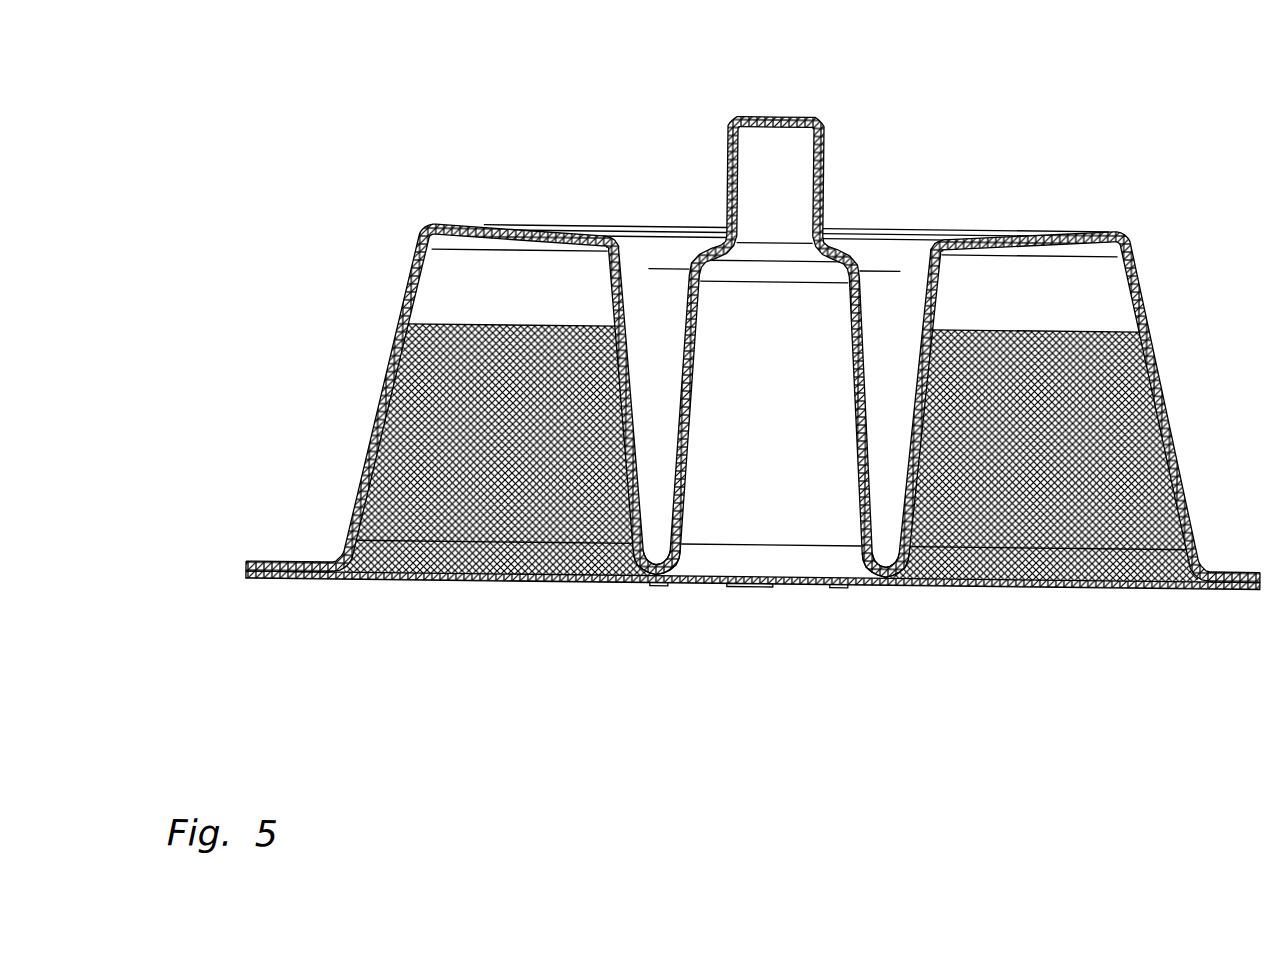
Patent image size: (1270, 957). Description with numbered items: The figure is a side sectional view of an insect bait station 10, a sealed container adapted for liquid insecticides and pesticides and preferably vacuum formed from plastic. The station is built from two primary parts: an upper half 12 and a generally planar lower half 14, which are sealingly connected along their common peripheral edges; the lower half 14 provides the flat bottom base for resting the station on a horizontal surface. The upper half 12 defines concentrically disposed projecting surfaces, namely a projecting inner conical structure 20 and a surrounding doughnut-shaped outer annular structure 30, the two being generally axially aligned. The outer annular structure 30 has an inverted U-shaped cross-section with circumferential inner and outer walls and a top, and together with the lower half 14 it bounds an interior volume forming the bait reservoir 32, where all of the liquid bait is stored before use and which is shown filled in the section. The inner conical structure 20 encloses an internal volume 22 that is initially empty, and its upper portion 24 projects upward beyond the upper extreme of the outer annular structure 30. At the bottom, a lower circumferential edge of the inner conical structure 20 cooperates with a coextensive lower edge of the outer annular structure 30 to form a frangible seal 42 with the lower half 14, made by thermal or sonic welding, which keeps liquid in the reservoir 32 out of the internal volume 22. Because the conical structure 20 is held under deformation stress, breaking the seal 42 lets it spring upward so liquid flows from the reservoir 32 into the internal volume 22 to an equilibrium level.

The insect bait station 10 is at (746, 378).
The upper half 12 is at (744, 526).
The lower half 14 is at (752, 631).
The inner conical structure 20 is at (843, 141).
The internal volume 22 is at (750, 393).
The upper portion 24 is at (724, 162).
The outer annular structure 30 is at (1134, 218).
The bait reservoir 32 is at (475, 314).
The frangible seal 42 is at (759, 615).